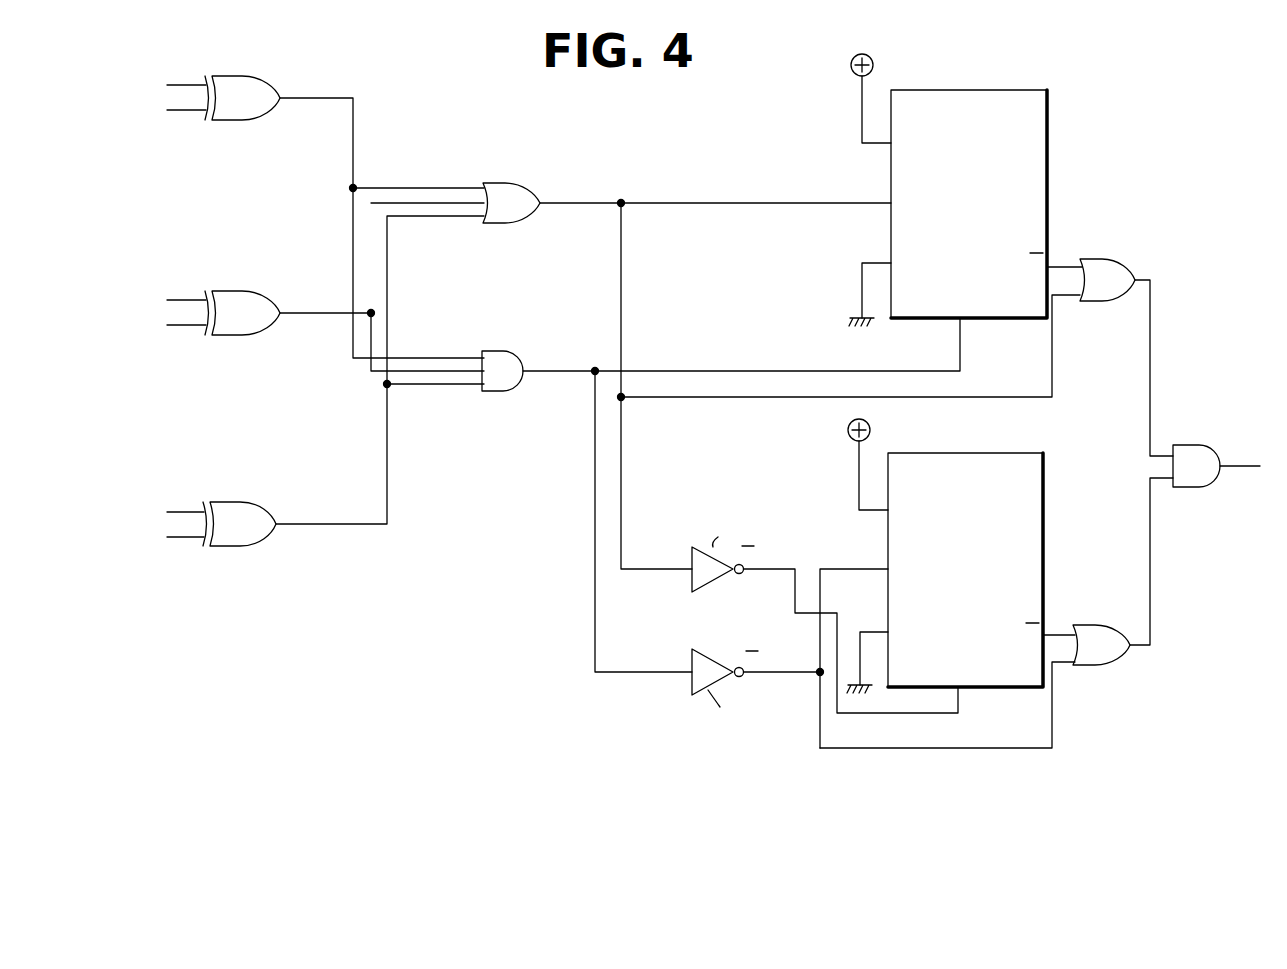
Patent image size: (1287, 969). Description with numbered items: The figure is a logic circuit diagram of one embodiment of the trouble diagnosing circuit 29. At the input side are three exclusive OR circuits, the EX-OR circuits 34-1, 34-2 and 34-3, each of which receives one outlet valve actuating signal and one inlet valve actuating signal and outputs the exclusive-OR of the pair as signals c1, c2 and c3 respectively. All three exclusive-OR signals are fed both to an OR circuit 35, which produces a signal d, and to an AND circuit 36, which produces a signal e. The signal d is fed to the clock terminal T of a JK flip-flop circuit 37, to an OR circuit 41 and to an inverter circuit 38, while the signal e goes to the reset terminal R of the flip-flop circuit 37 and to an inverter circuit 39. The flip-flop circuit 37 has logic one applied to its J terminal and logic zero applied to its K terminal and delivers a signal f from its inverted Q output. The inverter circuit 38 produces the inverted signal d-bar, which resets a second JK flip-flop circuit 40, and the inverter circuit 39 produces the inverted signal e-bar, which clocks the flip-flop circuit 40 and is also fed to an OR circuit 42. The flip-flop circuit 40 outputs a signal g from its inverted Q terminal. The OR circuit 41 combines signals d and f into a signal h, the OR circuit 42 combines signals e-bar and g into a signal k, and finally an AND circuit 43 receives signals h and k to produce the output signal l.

The trouble diagnosing circuit 29 is at (470, 157).
The EX-OR circuit 34-1 is at (248, 78).
The EX-OR circuit 34-2 is at (248, 293).
The EX-OR circuit 34-3 is at (246, 504).
The OR circuit 35 is at (502, 183).
The AND circuit 36 is at (497, 392).
The JK flip-flop circuit 37 is at (1047, 122).
The inverter circuit 38 is at (690, 580).
The inverter circuit 39 is at (690, 660).
The JK flip-flop circuit 40 is at (1043, 516).
The OR circuit 41 is at (1091, 259).
The OR circuit 42 is at (1082, 668).
The AND circuit 43 is at (1195, 445).